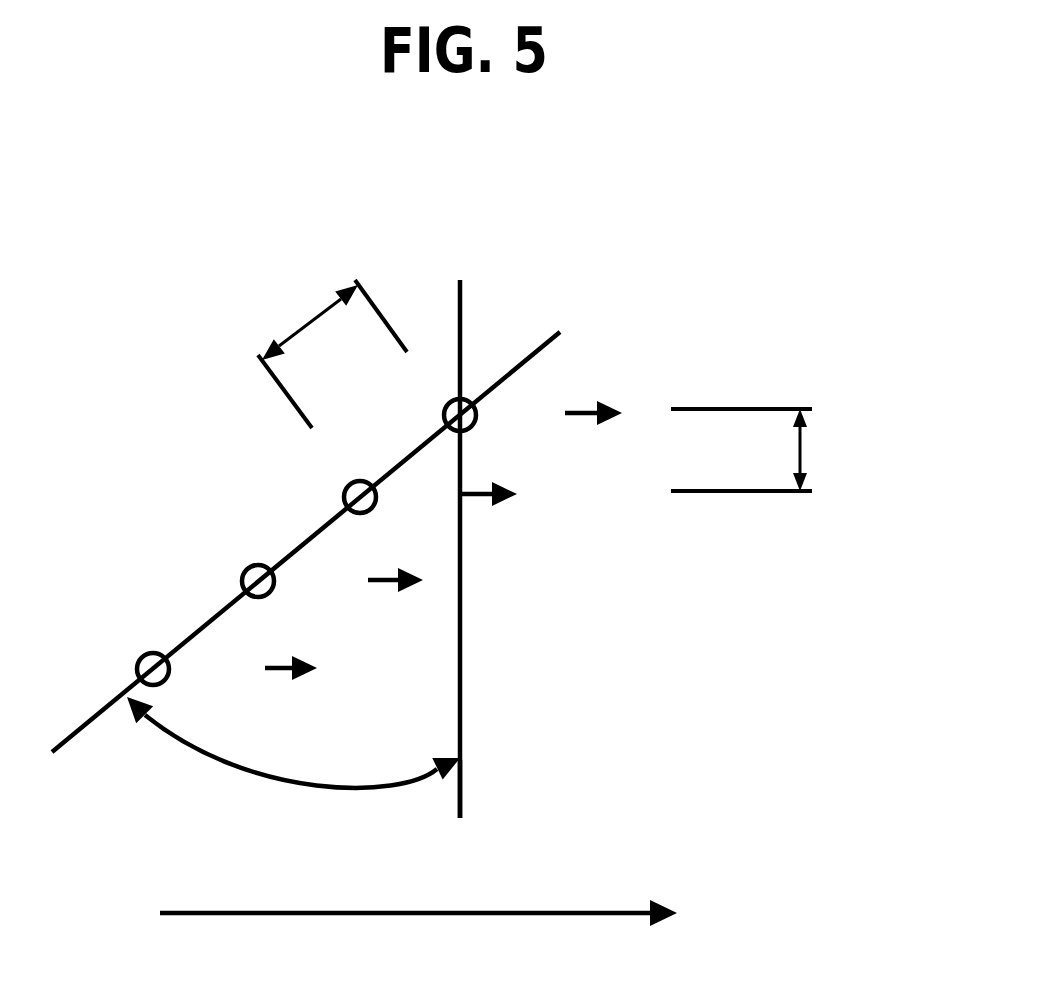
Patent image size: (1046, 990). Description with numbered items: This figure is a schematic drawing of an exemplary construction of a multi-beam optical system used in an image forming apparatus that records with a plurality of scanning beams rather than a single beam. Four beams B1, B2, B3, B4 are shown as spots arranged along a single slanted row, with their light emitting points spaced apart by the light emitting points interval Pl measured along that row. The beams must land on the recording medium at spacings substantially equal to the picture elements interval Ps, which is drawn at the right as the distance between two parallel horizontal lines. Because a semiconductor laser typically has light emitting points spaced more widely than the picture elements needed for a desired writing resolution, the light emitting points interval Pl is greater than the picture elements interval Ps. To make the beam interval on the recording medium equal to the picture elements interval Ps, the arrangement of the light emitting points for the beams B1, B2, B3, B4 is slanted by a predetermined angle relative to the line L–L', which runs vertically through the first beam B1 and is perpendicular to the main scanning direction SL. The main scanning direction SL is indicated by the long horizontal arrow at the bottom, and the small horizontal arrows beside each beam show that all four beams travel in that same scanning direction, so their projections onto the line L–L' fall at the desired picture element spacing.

The beam B1 is at (440, 418).
The beam B2 is at (343, 497).
The beam B3 is at (240, 579).
The beam B4 is at (134, 668).
The light emitting points interval Pl is at (312, 326).
The picture elements interval Ps is at (800, 442).
The line L–L' L is at (465, 528).
The line L– L' is at (469, 816).
The main scanning direction SL is at (500, 913).